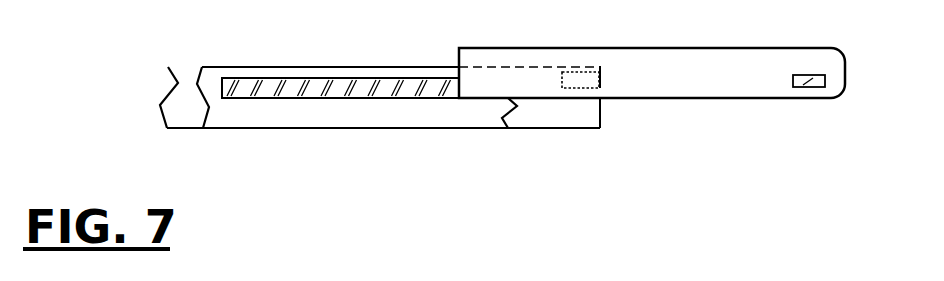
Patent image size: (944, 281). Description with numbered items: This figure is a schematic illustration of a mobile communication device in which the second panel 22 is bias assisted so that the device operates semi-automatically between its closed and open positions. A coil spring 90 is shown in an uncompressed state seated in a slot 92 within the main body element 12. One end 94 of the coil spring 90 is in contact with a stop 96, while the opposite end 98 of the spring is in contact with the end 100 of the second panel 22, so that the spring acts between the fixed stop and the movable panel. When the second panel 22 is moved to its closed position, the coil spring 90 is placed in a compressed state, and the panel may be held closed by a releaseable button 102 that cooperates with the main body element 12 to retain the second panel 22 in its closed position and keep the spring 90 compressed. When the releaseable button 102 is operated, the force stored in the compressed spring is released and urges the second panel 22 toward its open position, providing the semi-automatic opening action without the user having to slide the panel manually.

The main body element 12 is at (187, 127).
The second panel 22 is at (618, 48).
The coil spring 90 is at (332, 79).
The slot 92 is at (328, 98).
The one end of the spring 94 is at (229, 79).
The stop 96 is at (221, 87).
The opposite end of the spring 98 is at (444, 79).
The end of the second panel 100 is at (463, 98).
The releaseable button 102 is at (796, 88).